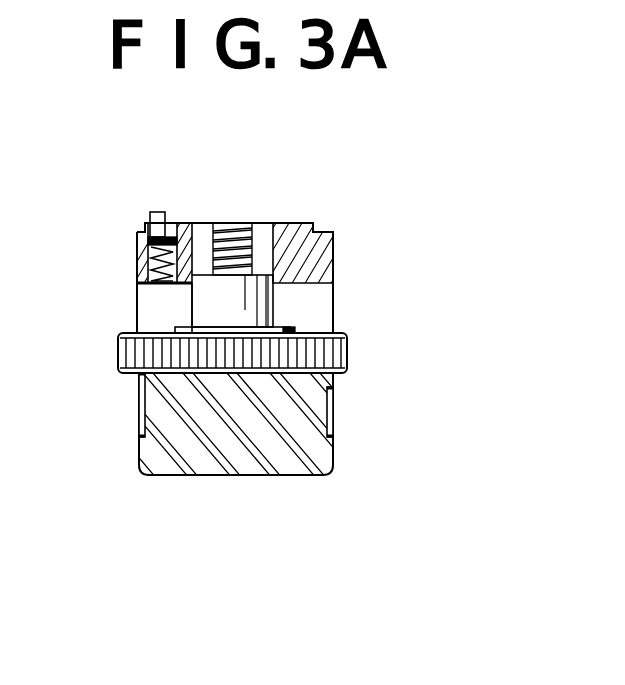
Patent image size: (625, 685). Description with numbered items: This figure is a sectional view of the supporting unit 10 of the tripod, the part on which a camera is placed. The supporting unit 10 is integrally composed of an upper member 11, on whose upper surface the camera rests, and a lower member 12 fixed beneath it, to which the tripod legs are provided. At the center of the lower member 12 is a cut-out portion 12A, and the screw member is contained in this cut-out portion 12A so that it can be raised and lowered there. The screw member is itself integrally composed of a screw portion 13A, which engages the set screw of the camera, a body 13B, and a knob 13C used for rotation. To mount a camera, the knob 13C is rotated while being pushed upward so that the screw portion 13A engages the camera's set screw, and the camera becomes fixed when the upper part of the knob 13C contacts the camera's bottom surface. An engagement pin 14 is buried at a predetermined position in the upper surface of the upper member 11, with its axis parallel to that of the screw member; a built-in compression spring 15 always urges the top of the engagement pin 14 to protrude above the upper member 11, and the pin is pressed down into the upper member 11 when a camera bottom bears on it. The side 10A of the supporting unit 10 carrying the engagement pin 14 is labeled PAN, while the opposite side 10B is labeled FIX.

The supporting unit 10 is at (350, 212).
The side of the supporting unit 10A is at (135, 415).
The opposite side of the supporting unit 10B is at (335, 412).
The upper member 11 is at (335, 256).
The lower member 12 is at (295, 477).
The cut-out portion 12A is at (152, 317).
The screw portion 13A is at (232, 223).
The body 13B is at (275, 307).
The knob 13C is at (345, 355).
The engagement pin 14 is at (155, 212).
The spring 15 is at (137, 264).